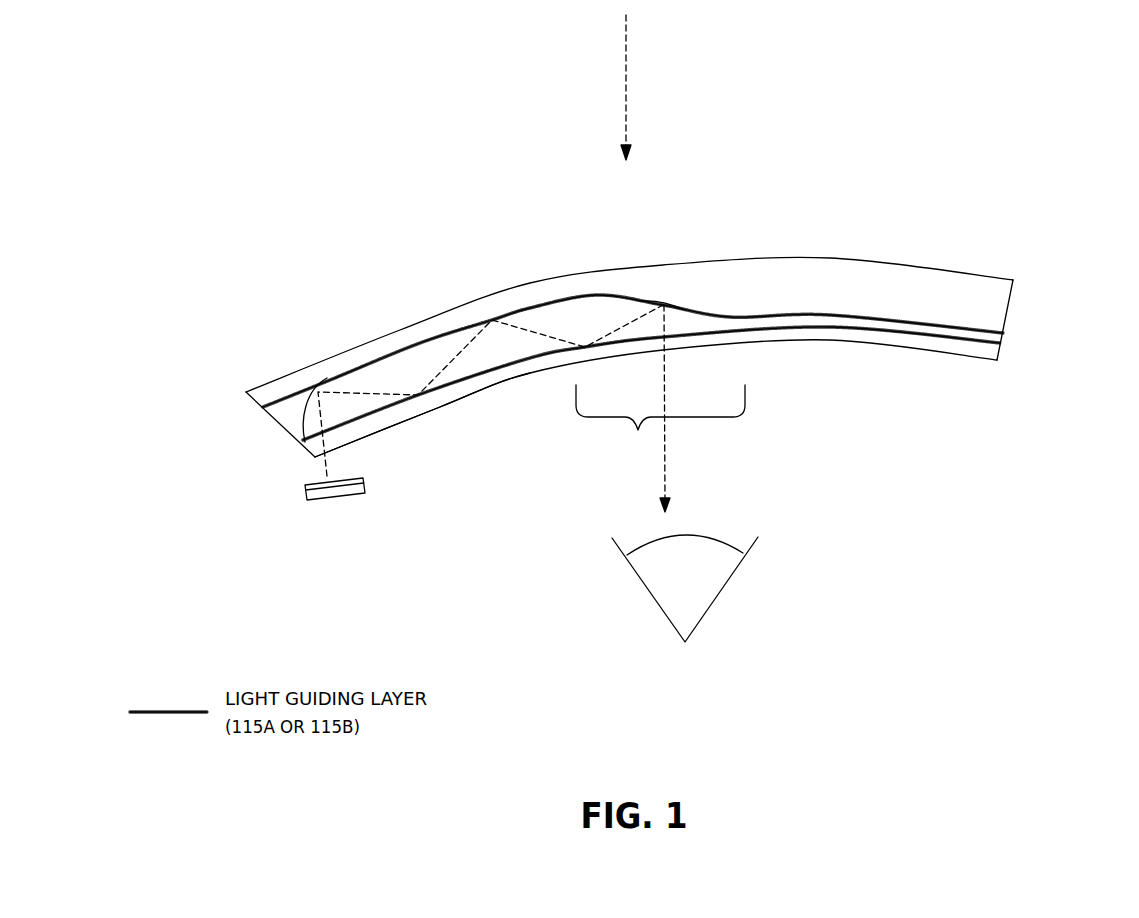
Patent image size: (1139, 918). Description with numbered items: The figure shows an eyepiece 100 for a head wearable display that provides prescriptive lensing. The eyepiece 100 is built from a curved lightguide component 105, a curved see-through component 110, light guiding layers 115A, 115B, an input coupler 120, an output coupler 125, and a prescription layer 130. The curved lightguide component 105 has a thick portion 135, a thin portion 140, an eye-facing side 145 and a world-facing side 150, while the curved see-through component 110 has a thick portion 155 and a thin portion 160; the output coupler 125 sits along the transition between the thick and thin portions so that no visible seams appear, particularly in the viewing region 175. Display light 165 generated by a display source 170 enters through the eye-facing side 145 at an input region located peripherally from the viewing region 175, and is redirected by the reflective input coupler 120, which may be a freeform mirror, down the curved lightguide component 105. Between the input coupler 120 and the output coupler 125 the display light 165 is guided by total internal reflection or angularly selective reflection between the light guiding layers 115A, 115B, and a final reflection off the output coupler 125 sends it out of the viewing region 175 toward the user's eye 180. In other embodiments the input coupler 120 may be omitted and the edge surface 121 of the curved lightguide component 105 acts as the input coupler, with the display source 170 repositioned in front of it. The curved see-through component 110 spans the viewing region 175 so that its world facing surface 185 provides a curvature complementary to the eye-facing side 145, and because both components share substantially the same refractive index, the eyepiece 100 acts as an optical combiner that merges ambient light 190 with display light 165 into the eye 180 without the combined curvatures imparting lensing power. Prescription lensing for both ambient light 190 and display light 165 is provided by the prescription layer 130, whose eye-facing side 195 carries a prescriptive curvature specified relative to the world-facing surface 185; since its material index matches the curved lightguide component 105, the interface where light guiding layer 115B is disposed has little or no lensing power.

The eyepiece 100 is at (242, 108).
The curved lightguide component 105 is at (615, 341).
The curved see-through component 110 is at (895, 280).
The light guiding layer 115A is at (1003, 333).
The light guiding layer 115B is at (1000, 343).
The input coupler 120 is at (287, 430).
The edge surface 121 is at (287, 437).
The output coupler 125 is at (665, 303).
The prescription layer 130 is at (413, 410).
The thick portion 135 is at (482, 359).
The thin portion 140 is at (958, 332).
The eye-facing side 145 is at (842, 333).
The world-facing side 150 is at (538, 251).
The thick portion 155 is at (788, 299).
The thin portion 160 is at (313, 368).
The display light 165 is at (665, 457).
The display source 170 is at (325, 502).
The viewing region 175 is at (638, 430).
The eye 180 is at (667, 590).
The world facing surface 185 is at (443, 308).
The ambient light 190 is at (626, 77).
The eye-facing side 195 is at (447, 398).